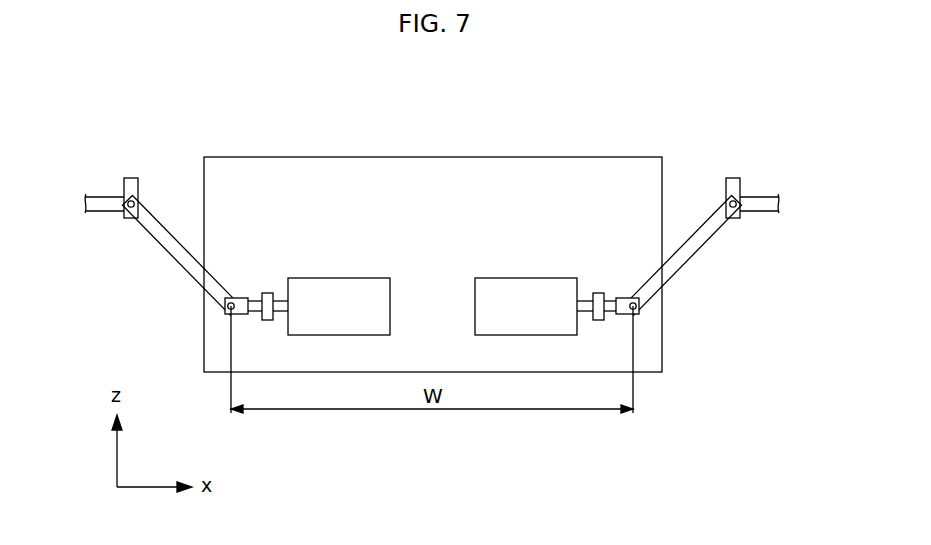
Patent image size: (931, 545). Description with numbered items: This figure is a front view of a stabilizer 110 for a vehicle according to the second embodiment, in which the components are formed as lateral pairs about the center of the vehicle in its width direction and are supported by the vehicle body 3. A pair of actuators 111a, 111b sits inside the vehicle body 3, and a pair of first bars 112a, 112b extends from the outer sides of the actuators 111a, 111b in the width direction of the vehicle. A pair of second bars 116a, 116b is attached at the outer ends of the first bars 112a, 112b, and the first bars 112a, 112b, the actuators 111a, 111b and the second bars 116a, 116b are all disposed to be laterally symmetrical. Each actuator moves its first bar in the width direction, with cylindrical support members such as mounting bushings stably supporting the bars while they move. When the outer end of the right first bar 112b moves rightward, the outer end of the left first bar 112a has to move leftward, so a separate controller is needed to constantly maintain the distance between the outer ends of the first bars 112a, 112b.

The vehicle body 3 is at (430, 156).
The stabilizer 110 is at (505, 126).
The actuator 111a is at (330, 278).
The actuator 111b is at (528, 278).
The second bar 116a is at (179, 266).
The second bar 116b is at (679, 268).
The first bar 112a is at (253, 317).
The first bar 112b is at (613, 317).